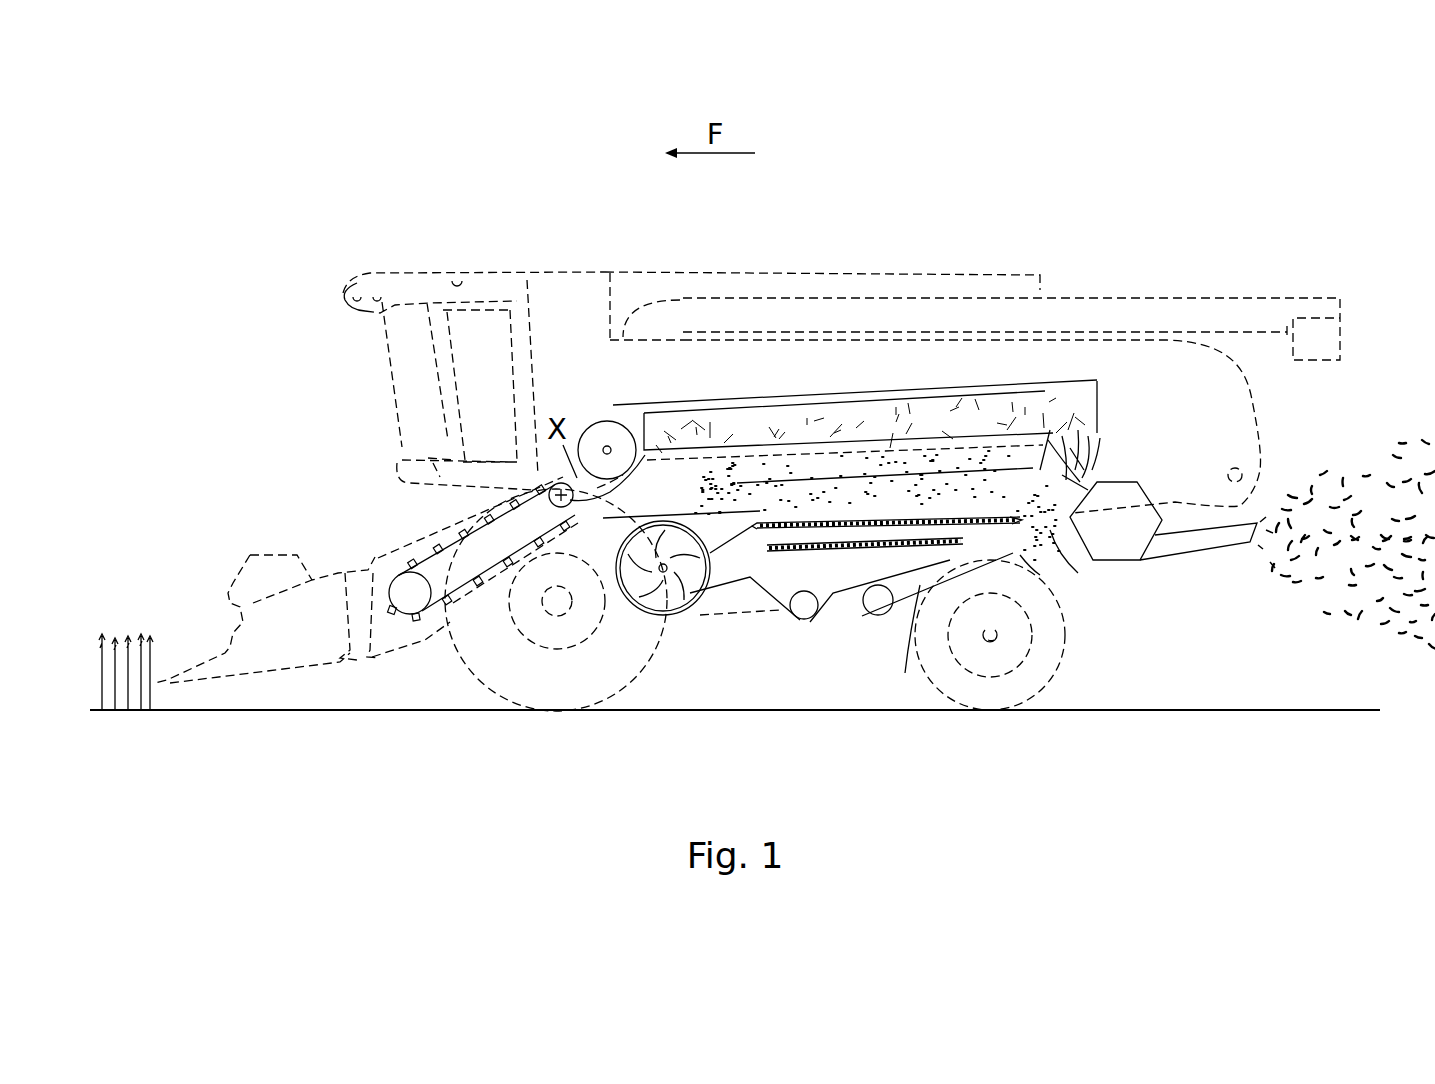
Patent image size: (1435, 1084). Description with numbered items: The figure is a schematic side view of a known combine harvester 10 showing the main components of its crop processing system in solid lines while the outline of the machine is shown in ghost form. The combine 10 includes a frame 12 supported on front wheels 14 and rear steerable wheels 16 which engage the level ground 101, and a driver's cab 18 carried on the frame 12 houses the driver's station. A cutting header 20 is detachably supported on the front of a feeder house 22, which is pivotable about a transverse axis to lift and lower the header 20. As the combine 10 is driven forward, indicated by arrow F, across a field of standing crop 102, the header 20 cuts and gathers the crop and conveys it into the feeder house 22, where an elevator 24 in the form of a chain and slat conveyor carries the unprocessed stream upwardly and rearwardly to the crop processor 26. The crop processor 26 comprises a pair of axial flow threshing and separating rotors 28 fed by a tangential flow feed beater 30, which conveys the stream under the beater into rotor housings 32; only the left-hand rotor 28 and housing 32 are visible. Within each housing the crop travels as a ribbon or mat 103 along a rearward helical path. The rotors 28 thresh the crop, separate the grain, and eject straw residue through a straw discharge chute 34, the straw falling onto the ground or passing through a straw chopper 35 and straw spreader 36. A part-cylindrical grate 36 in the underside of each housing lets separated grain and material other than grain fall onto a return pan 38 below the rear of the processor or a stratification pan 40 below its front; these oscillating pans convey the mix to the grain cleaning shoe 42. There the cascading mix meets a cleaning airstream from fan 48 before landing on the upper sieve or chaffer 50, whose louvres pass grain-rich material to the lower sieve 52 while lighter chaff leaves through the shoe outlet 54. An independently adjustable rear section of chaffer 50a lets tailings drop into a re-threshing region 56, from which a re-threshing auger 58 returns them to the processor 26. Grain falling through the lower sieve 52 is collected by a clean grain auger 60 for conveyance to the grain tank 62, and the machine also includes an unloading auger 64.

The combine harvester 10 is at (378, 214).
The frame 12 is at (754, 612).
The front wheels 14 is at (486, 685).
The rear steerable wheels 16 is at (1046, 690).
The driver's cab 18 is at (454, 273).
The cutting header 20 is at (254, 531).
The feeder house 22 is at (418, 540).
The elevator 24 is at (452, 605).
The crop processor 26 is at (665, 406).
The axial flow threshing and separating rotor 28 is at (834, 397).
The feed beater 30 is at (601, 420).
The rotor housing 32 is at (752, 397).
The straw discharge chute 34 is at (1085, 443).
The straw chopper 35 is at (1116, 560).
The straw spreader / part-cylindrical grate 36 is at (1220, 592).
The return pan 38 is at (966, 470).
The stratification pan 40 is at (630, 527).
The grain cleaning shoe 42 is at (847, 614).
The fan 48 is at (665, 604).
The upper sieve or chaffer 50 is at (875, 528).
The rear section of chaffer 50a is at (980, 527).
The lower sieve 52 is at (855, 552).
The shoe outlet 54 is at (1081, 588).
The re-threshing region 56 is at (905, 673).
The re-threshing auger 58 is at (880, 616).
The clean grain auger 60 is at (804, 620).
The grain tank 62 is at (735, 270).
The unloading auger 64 is at (1181, 296).
The ground 101 is at (246, 712).
The standing crop 102 is at (130, 640).
The ribbon or mat 103 is at (916, 393).